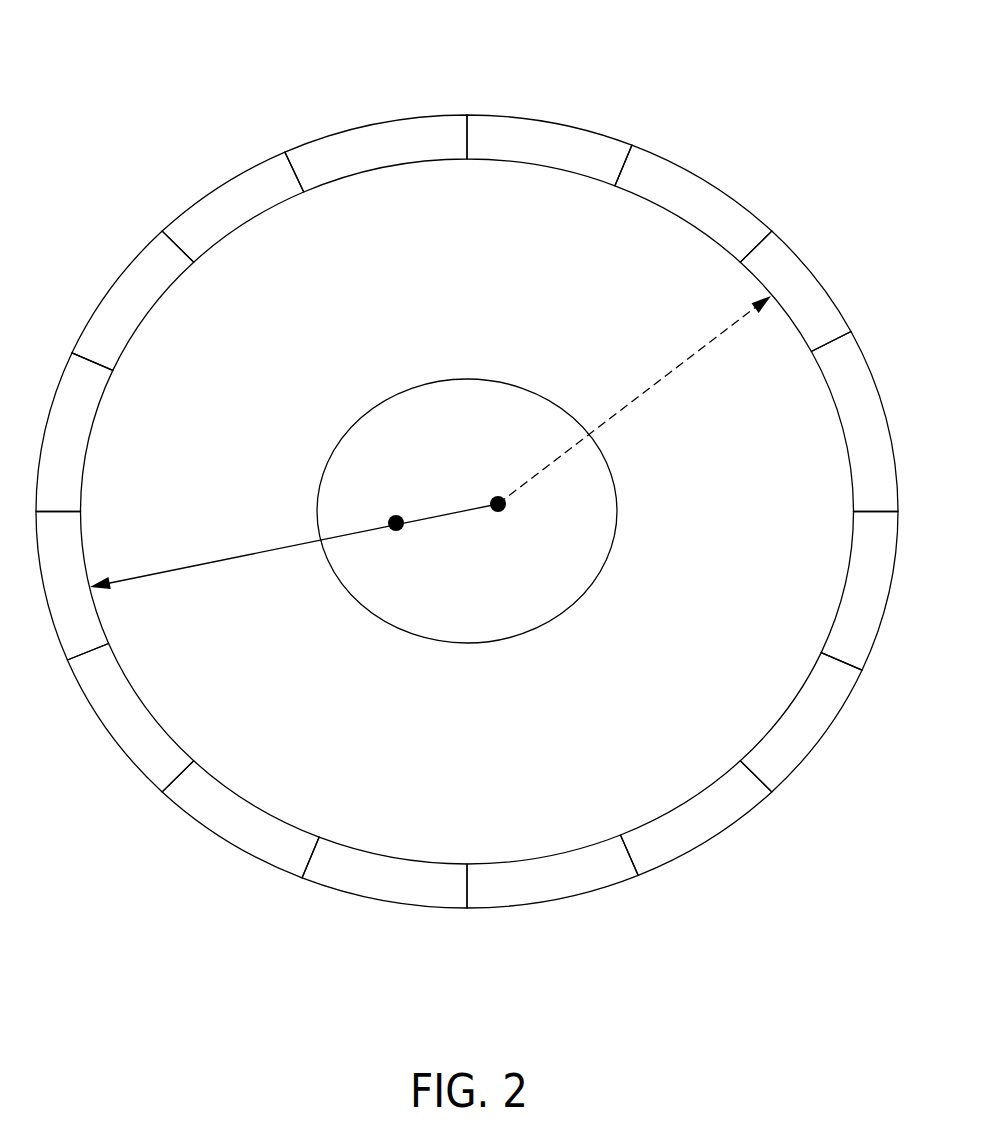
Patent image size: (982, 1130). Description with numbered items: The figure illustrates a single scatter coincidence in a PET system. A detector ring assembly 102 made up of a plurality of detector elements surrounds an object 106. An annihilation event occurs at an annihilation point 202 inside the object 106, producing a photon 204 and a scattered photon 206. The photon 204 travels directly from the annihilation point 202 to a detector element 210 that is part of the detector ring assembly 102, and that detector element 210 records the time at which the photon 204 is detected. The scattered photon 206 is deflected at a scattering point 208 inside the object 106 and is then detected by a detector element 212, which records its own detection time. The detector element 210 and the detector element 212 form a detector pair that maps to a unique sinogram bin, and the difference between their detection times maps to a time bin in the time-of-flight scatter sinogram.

The detector ring assembly 102 is at (132, 61).
The object 106 is at (462, 378).
The annihilation point 202 is at (394, 518).
The photon 204 is at (92, 588).
The scattered photon 206 is at (768, 294).
The scattering point 208 is at (494, 510).
The detector element 210 is at (50, 613).
The detector element 212 is at (821, 283).